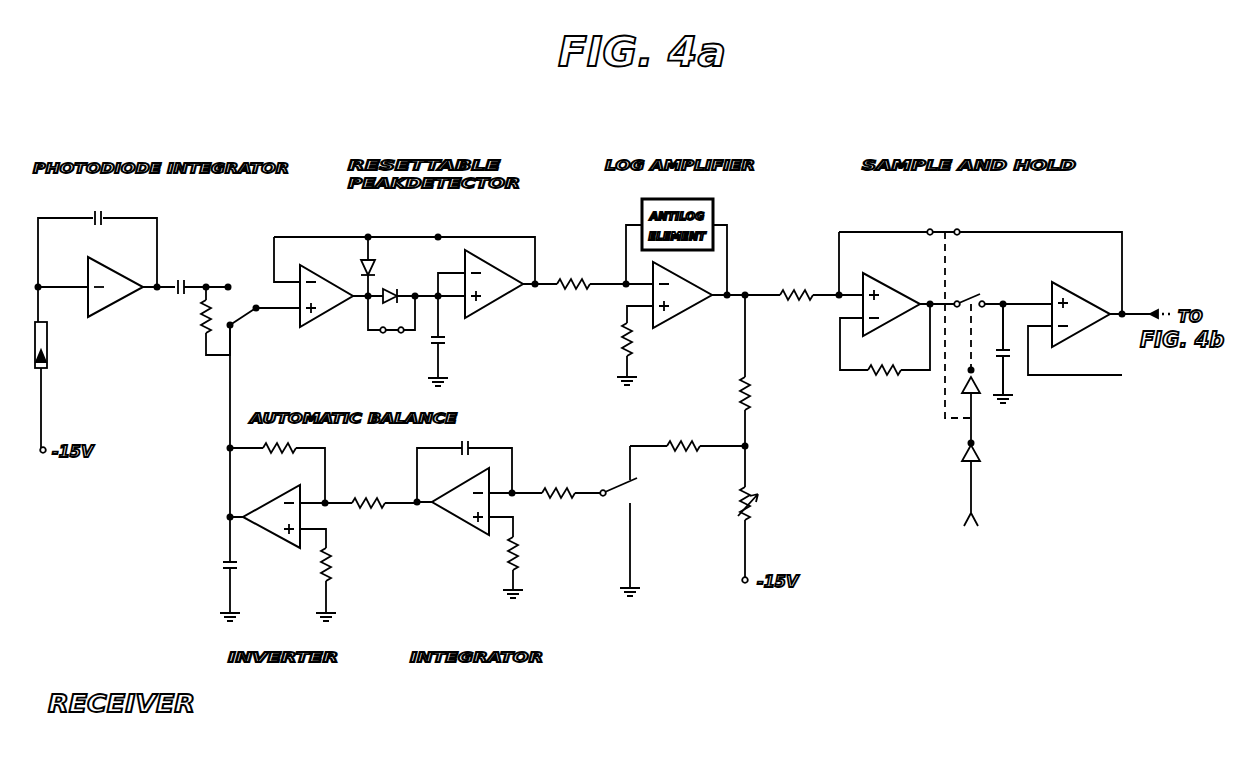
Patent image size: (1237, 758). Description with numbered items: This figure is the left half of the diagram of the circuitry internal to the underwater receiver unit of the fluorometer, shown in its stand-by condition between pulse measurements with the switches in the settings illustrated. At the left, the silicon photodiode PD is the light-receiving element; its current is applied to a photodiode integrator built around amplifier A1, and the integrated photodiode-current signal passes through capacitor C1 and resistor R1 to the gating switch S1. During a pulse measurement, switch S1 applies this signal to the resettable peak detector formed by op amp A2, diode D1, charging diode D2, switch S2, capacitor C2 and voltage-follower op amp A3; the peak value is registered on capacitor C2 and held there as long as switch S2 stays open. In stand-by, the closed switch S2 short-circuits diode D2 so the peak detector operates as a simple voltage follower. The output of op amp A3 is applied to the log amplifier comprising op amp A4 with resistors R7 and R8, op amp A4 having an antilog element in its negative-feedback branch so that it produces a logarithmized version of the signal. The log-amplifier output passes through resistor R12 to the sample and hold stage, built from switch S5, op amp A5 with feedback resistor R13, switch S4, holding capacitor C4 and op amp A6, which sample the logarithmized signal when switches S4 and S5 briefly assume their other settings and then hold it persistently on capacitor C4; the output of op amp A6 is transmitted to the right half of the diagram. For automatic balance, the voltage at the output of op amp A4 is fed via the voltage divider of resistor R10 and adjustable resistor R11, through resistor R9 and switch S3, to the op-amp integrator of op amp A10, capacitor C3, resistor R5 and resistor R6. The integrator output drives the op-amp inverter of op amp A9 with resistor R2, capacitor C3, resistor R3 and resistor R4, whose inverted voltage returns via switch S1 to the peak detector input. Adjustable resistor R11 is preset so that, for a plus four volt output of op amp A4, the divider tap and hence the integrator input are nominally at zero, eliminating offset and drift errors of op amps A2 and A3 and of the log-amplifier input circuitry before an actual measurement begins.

The silicon photodiode PD is at (47, 343).
The amplifier A1 is at (110, 312).
The coupling capacitor C1 is at (202, 272).
The resistor R1 is at (200, 320).
The gating switch S1 is at (238, 326).
The op amp A2 is at (322, 333).
The diode D1 is at (372, 268).
The charging diode D2 is at (395, 292).
The switch S2 is at (390, 334).
The peak-detector capacitor C2 is at (445, 340).
The voltage-follower op amp A3 is at (495, 312).
The resistor R7 is at (570, 290).
The resistor R8 is at (620, 340).
The op amp A4 is at (684, 326).
The resistor R12 is at (800, 288).
The voltage divider resistor R10 is at (750, 395).
The resistor R9 is at (688, 440).
The adjustable resistor R11 is at (750, 510).
The switch S3 is at (630, 490).
The switch S5 is at (932, 226).
The op amp A5 is at (890, 330).
The resistor R13 is at (880, 378).
The switch S4 is at (972, 290).
The holding capacitor C4 is at (1010, 352).
The op amp A6 is at (1080, 342).
The resistor R2 is at (278, 454).
The op-amp inverter A9 is at (272, 542).
The resistor R4 is at (372, 497).
The resistor R3 is at (332, 566).
The capacitor C3 is at (470, 442).
The op-amp integrator A10 is at (458, 528).
The resistor R6 is at (562, 487).
The resistor R5 is at (518, 550).